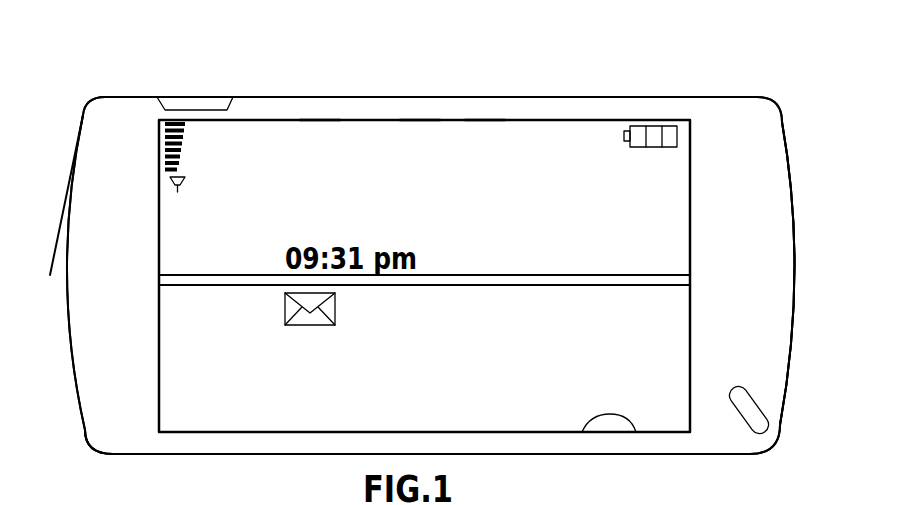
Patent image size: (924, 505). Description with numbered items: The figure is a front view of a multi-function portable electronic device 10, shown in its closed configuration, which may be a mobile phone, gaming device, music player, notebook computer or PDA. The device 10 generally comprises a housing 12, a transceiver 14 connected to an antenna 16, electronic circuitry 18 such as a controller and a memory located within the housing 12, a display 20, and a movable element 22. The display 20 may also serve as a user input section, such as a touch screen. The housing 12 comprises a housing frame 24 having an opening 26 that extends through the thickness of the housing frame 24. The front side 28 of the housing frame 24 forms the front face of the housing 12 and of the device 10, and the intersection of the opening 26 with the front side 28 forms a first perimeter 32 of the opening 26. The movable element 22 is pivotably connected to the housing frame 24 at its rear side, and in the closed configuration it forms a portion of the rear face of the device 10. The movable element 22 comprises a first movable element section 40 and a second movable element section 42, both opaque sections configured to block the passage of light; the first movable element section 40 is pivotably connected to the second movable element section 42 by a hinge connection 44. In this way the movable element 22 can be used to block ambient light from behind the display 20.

The device 10 is at (96, 78).
The housing 12 is at (787, 137).
The transceiver 14 is at (468, 148).
The antenna 16 is at (403, 148).
The electronic circuitry 18 is at (328, 148).
The display 20 is at (215, 243).
The movable element 22 is at (281, 192).
The housing frame 24 is at (765, 267).
The opening 26 is at (600, 420).
The front side 28 is at (108, 348).
The first perimeter 32 is at (159, 393).
The first movable element section 40 is at (342, 393).
The second movable element section 42 is at (670, 178).
The hinge connection 44 is at (643, 279).